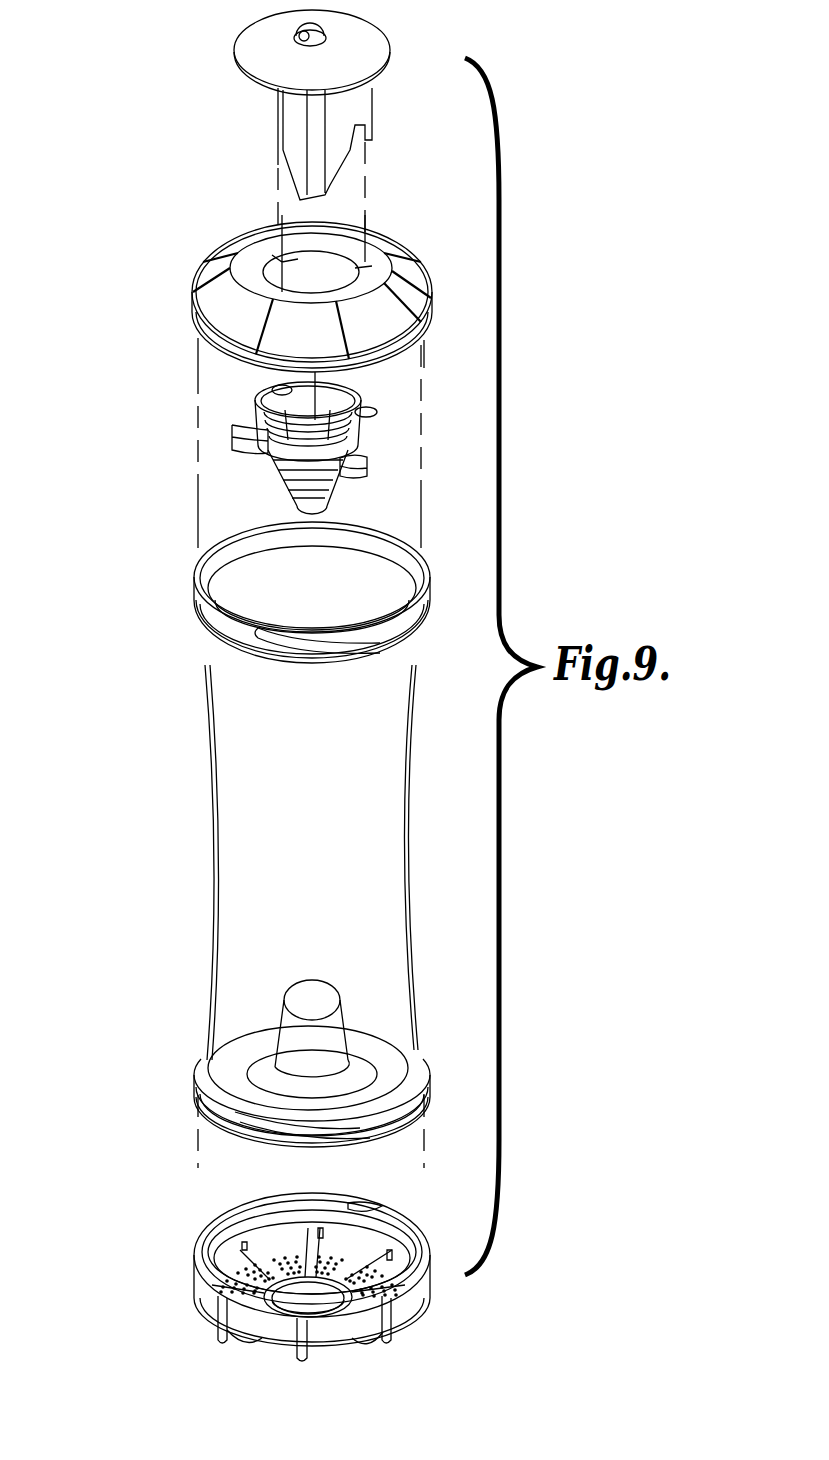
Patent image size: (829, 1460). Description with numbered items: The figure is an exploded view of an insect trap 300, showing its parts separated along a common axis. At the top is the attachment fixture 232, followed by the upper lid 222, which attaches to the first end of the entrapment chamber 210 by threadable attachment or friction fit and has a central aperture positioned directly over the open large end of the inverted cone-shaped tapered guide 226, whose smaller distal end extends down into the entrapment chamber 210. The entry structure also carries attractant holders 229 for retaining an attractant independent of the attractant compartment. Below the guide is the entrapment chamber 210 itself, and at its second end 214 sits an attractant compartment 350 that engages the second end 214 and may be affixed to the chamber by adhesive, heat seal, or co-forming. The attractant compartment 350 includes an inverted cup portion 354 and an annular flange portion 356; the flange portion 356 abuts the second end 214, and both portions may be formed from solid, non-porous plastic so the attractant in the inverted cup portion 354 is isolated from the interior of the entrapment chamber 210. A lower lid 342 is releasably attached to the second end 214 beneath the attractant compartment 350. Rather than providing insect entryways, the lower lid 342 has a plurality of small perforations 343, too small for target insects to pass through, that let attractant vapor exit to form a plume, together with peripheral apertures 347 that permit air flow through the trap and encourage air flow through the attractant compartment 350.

The insect trap 300 is at (126, 689).
The attachment fixture 232 is at (389, 33).
The upper lid 222 is at (198, 270).
The tapered guide 226 is at (279, 477).
The attractant holders 229 is at (366, 464).
The entrapment chamber 210 is at (211, 868).
The attractant compartment 350 is at (280, 1007).
The inverted cup portion 354 is at (320, 1030).
The annular flange portion 356 is at (232, 1078).
The second end 214 is at (222, 1122).
The lower lid 342 is at (311, 1258).
The peripheral apertures 347 is at (285, 1230).
The perforations 343 is at (248, 1279).